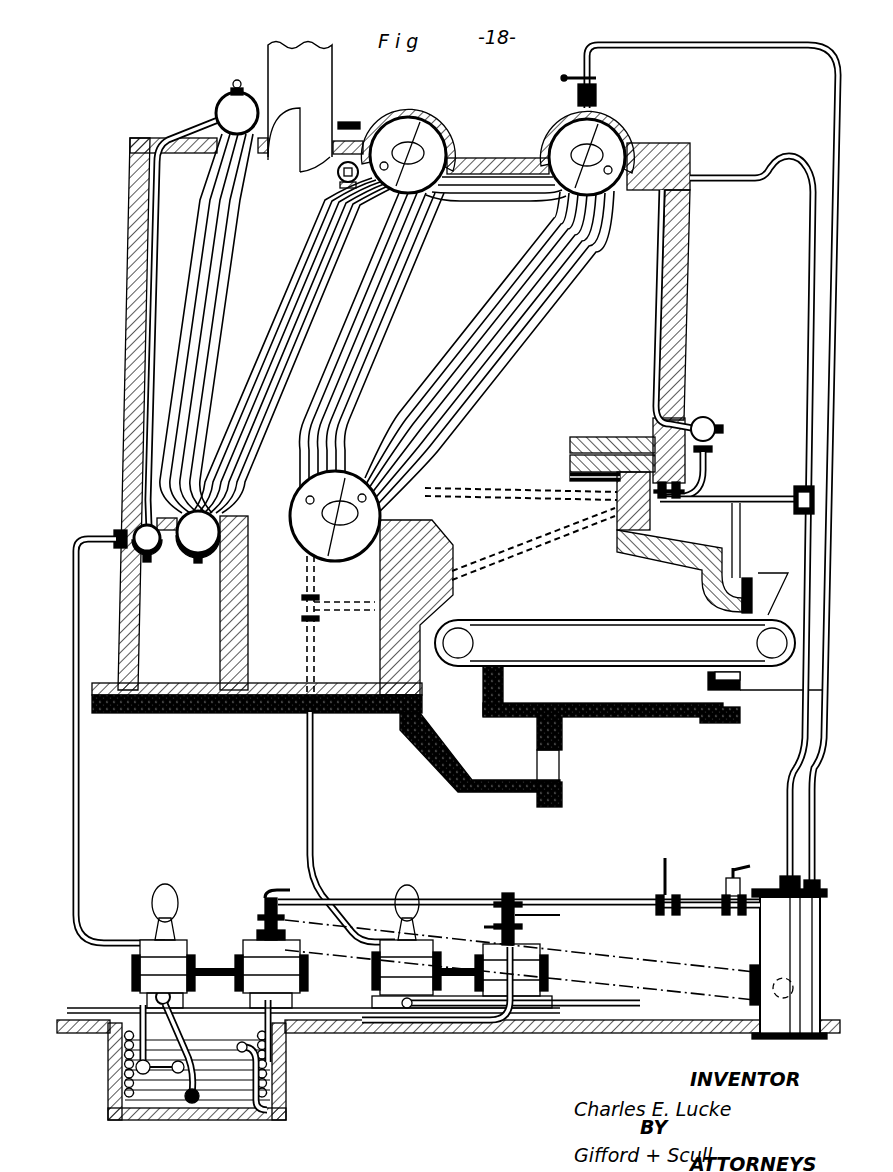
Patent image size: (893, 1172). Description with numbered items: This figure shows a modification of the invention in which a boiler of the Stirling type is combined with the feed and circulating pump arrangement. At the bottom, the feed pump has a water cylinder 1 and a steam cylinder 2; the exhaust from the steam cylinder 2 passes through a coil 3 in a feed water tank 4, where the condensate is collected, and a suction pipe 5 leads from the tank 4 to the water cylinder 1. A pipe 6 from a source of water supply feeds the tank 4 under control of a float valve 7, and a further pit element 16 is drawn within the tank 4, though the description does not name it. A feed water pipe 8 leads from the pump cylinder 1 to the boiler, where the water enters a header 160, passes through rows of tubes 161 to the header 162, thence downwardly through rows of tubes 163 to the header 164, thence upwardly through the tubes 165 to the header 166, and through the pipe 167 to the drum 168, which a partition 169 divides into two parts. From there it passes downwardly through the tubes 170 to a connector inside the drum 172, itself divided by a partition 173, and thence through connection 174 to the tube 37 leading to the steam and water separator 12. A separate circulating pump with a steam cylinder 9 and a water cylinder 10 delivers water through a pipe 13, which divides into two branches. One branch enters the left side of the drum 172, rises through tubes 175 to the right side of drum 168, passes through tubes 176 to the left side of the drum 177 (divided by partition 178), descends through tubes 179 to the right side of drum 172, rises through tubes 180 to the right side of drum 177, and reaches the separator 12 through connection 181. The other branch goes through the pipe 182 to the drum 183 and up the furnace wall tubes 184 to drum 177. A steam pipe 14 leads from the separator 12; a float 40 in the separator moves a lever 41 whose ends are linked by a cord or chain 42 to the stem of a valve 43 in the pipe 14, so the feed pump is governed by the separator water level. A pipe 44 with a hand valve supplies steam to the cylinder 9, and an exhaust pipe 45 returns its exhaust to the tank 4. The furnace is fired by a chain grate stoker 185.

The water cylinder 1 is at (137, 970).
The steam cylinder 2 is at (304, 972).
The coil 3 is at (284, 1060).
The feed water tank 4 is at (288, 1092).
The suction pipe 5 is at (118, 1044).
The pipe 6 is at (92, 1006).
The float valve 7 is at (160, 1070).
The feed water pipe 8 is at (80, 801).
The steam cylinder 9 is at (548, 984).
The water cylinder 10 is at (376, 974).
The steam and water separator 12 is at (772, 926).
The pipe 13 is at (314, 821).
The steam pipe 14 is at (432, 900).
The pipe 16 is at (282, 1105).
The tube 37 is at (802, 549).
The float 40 is at (770, 948).
The lever 41 is at (755, 984).
The cord or chain 42 is at (646, 990).
The valve 43 is at (262, 918).
The pipe 44 is at (528, 916).
The exhaust pipe 45 is at (362, 1028).
The header 160 is at (150, 553).
The tubes 161 is at (150, 396).
The header 162 is at (222, 100).
The tubes 163 is at (236, 238).
The header 164 is at (208, 565).
The tubes 165 is at (296, 282).
The header 166 is at (337, 178).
The pipe 167 is at (372, 125).
The drum 168 is at (418, 118).
The partition 169 is at (440, 136).
The tubes 170 is at (290, 504).
The drum 172 is at (310, 540).
The partition 173 is at (306, 590).
The connection 174 is at (458, 490).
The tubes 175 is at (400, 258).
The tubes 176 is at (500, 203).
The drum 177 is at (622, 128).
The partition 178 is at (548, 148).
The tubes 179 is at (492, 310).
The tubes 180 is at (535, 372).
The connection 181 is at (733, 182).
The pipe 182 is at (491, 573).
The drum 183 is at (718, 420).
The furnace wall tubes 184 is at (652, 342).
The chain grate stoker 185 is at (570, 622).